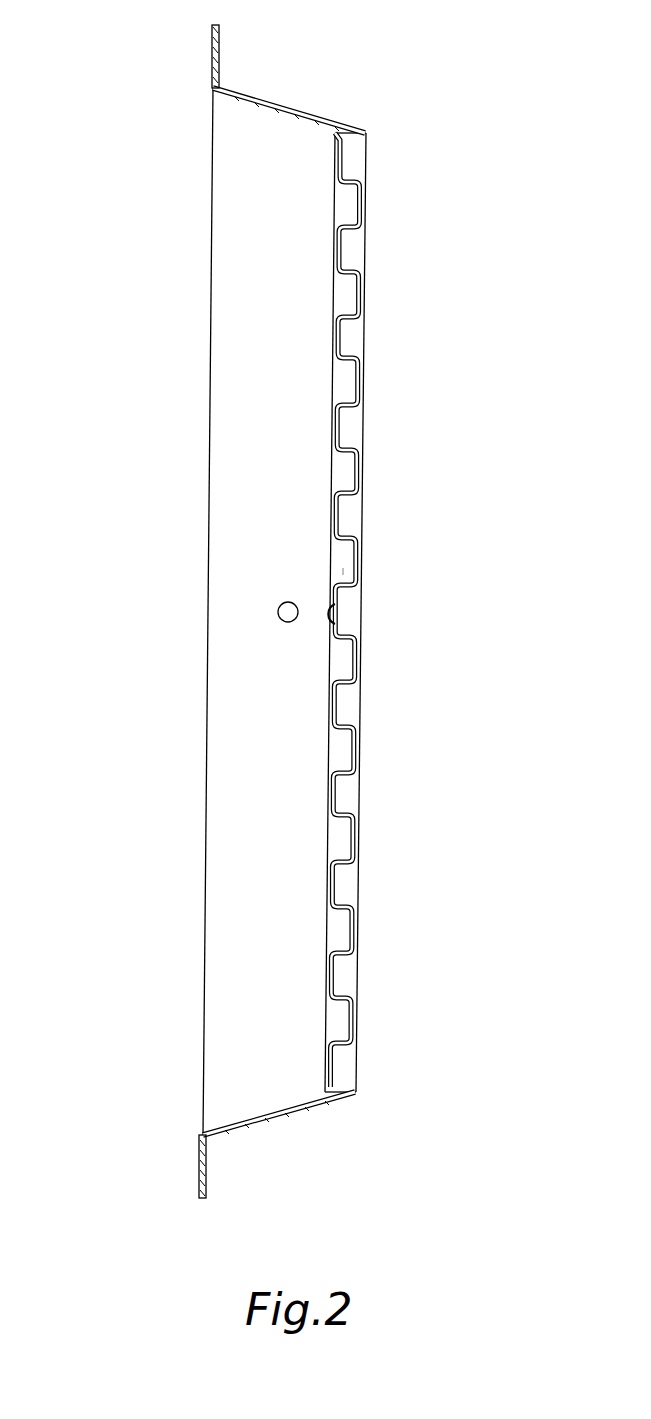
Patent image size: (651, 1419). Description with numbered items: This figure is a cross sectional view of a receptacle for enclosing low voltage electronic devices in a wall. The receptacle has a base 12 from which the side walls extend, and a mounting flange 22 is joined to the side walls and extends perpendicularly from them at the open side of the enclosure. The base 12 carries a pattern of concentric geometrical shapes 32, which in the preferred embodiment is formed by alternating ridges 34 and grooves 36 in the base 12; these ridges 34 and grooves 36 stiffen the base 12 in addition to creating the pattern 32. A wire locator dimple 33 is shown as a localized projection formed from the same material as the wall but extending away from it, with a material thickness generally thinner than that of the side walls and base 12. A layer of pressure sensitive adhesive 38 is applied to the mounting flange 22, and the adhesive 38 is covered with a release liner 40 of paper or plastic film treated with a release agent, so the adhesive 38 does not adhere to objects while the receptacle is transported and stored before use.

The base 12 is at (333, 602).
The mounting flange 22 is at (220, 38).
The pattern of concentric geometrical shapes 32 is at (185, 454).
The wire locator dimple 33 is at (327, 617).
The ridges 34 is at (333, 428).
The grooves 36 is at (342, 571).
The pressure sensitive adhesive 38 is at (212, 90).
The release liner 40 is at (212, 58).